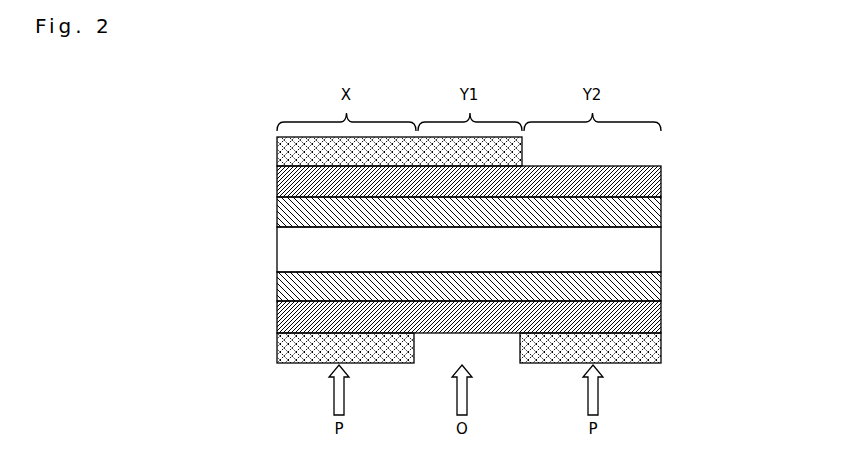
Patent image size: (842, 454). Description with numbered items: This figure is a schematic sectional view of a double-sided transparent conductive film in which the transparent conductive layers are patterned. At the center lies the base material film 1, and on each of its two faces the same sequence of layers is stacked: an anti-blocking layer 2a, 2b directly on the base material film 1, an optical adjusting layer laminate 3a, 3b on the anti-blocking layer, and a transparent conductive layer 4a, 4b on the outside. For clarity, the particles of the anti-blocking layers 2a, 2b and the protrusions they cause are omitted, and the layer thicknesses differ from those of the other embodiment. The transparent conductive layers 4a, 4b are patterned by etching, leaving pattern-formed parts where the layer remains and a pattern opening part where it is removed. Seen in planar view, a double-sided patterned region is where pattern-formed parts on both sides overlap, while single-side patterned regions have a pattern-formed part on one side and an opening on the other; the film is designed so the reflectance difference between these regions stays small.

The base material film 1 is at (650, 253).
The anti-blocking layer 2a is at (662, 212).
The anti-blocking layer 2b is at (662, 284).
The optical adjusting layer laminate 3a is at (662, 180).
The optical adjusting layer laminate 3b is at (662, 316).
The transparent conductive layer 4a is at (285, 157).
The transparent conductive layer 4b is at (285, 351).